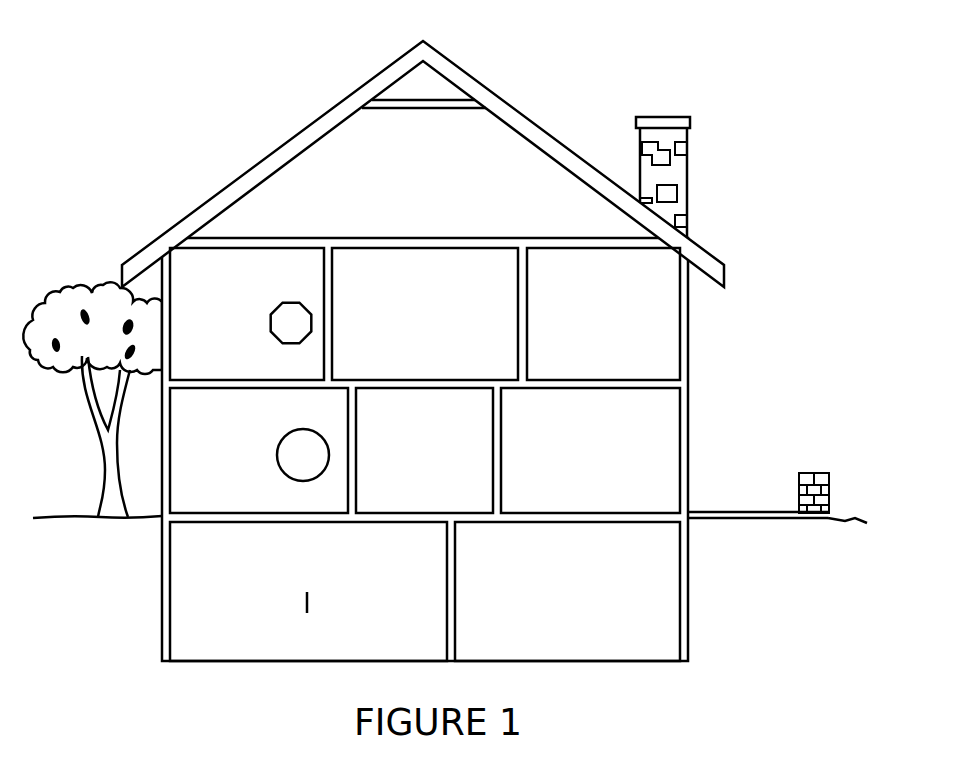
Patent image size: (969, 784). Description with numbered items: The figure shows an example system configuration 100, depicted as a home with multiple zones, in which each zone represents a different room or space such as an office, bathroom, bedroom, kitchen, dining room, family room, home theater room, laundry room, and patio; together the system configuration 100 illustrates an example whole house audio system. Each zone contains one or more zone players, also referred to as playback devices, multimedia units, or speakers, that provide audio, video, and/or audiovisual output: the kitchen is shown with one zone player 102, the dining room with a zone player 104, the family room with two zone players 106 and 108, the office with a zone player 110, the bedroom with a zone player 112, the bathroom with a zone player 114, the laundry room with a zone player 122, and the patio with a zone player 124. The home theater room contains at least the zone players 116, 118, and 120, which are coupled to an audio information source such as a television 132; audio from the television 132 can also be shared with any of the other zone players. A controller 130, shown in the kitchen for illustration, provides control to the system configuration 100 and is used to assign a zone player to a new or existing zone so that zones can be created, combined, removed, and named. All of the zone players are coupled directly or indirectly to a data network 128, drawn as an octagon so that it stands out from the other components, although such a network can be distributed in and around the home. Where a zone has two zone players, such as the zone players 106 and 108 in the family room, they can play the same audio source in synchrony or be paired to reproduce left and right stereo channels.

The system configuration 100 is at (196, 84).
The zone player 102 is at (259, 450).
The zone player 104 is at (424, 450).
The zone player 106 is at (590, 450).
The zone player 108 is at (651, 456).
The zone player 110 is at (247, 314).
The zone player 112 is at (603, 314).
The zone player 114 is at (425, 314).
The zone player 116 is at (308, 591).
The zone player 118 is at (392, 614).
The zone player 120 is at (307, 627).
The zone player 122 is at (567, 591).
The zone player 124 is at (758, 478).
The data network 128 is at (291, 323).
The controller 130 is at (303, 455).
The television 132 is at (307, 589).